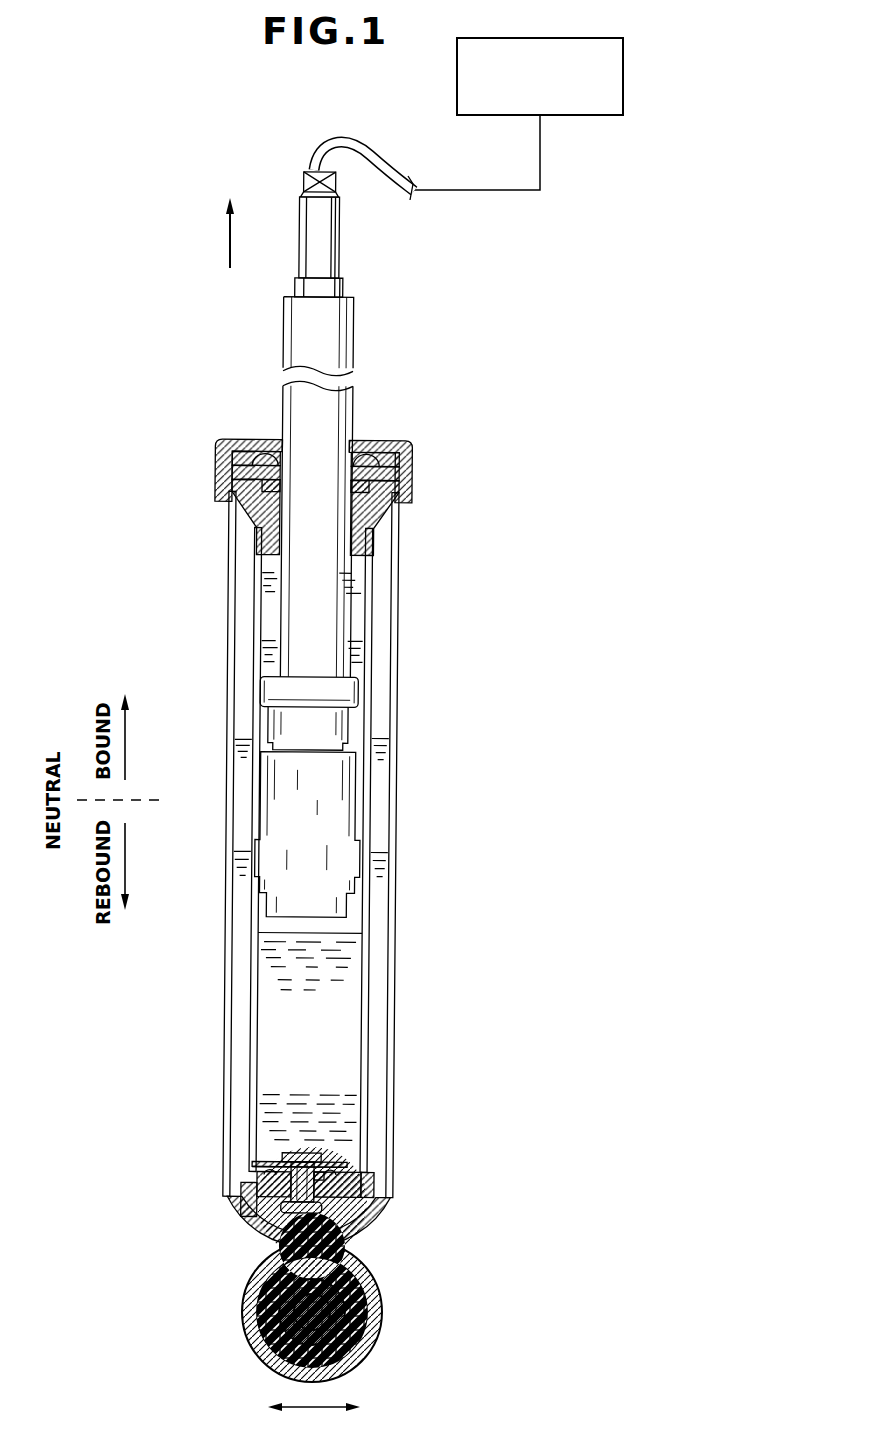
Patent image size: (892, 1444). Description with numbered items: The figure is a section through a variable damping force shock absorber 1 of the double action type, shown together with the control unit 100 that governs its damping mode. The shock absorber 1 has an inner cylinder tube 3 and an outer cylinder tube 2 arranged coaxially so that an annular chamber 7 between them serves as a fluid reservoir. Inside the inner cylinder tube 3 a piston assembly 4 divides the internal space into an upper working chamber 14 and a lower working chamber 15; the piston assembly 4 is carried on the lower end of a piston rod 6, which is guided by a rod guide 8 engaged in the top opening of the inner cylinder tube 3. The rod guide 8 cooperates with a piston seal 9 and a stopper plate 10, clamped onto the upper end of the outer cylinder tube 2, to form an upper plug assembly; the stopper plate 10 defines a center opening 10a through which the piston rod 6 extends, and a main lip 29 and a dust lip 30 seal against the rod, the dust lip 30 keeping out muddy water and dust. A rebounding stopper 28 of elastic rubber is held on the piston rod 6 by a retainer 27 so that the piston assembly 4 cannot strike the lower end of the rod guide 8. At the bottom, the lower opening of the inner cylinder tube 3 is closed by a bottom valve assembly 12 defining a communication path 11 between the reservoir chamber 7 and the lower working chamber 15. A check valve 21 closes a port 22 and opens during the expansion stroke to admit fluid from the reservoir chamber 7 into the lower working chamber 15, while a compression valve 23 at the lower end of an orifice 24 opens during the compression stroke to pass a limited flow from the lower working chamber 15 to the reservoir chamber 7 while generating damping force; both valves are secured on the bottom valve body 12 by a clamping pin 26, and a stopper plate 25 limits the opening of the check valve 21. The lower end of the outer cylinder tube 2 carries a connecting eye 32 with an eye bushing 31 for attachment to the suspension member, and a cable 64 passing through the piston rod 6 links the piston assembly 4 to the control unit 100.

The shock absorber 1 is at (392, 293).
The outer cylinder tube 2 is at (399, 658).
The inner cylinder tube 3 is at (373, 624).
The piston assembly 4 is at (347, 818).
The piston rod 6 is at (352, 338).
The annular chamber 7 is at (384, 585).
The rod guide 8 is at (398, 520).
The piston seal 9 is at (388, 455).
The stopper plate 10 is at (412, 472).
The center opening 10a is at (355, 440).
The communication path 11 is at (240, 1178).
The bottom valve assembly 12 is at (307, 1152).
The upper working chamber 14 is at (262, 591).
The lower working chamber 15 is at (270, 1038).
The check valve 21 is at (364, 1167).
The port 22 is at (258, 1170).
The compression valve 23 is at (277, 1204).
The orifice 24 is at (258, 1192).
The stopper plate 25 is at (350, 1160).
The clamping pin 26 is at (318, 1153).
The retainer 27 is at (336, 725).
The rebounding stopper 28 is at (352, 692).
The main lip 29 is at (236, 480).
The dust lip 30 is at (250, 443).
The eye bushing 31 is at (266, 1304).
The connecting eye 32 is at (382, 1293).
The cable 64 is at (372, 158).
The control unit 100 is at (624, 80).